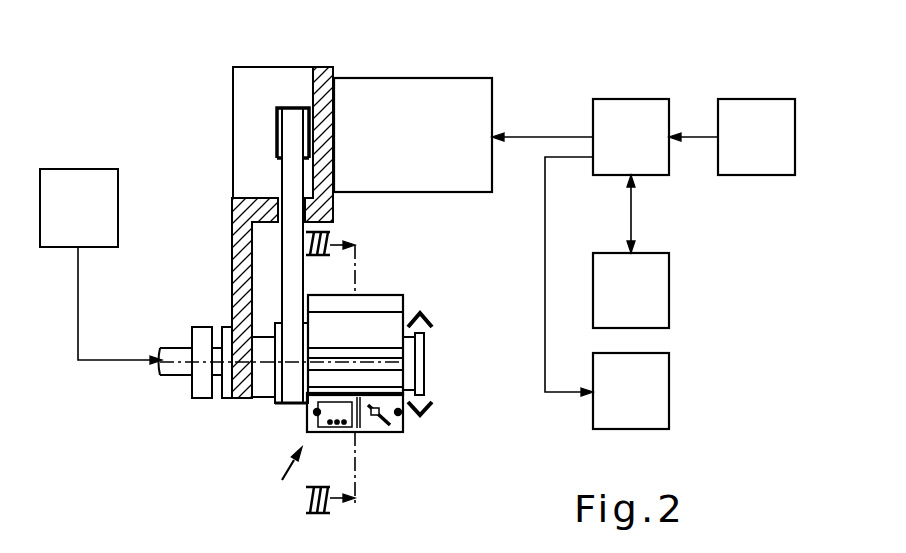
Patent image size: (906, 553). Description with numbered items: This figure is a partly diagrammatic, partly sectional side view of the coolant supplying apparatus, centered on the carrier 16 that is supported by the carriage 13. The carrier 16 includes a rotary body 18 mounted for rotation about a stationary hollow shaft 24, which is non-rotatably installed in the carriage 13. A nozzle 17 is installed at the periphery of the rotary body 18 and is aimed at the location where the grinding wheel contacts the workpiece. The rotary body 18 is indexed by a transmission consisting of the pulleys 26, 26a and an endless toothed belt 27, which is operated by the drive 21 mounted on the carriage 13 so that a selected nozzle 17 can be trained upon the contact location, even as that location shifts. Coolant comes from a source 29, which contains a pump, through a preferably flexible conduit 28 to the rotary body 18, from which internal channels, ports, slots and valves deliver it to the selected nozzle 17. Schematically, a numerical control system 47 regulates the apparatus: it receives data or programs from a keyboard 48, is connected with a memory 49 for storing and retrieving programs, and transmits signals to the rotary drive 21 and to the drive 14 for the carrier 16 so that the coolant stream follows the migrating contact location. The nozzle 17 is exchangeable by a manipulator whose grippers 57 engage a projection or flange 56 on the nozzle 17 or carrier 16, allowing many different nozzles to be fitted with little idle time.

The carriage 13 is at (320, 92).
The pulley 26a is at (275, 127).
The endless toothed belt 27 is at (290, 180).
The pulley 26 is at (275, 323).
The source of coolant 29 is at (110, 232).
The conduit 28 is at (177, 358).
The hollow shaft 24 is at (267, 380).
The drive 21 is at (383, 93).
The rotary body 18 is at (363, 305).
The projection or flange 56 is at (425, 345).
The grippers 57 is at (430, 410).
The nozzle 17 is at (362, 422).
The carrier 16 is at (277, 482).
The control system 47 is at (619, 110).
The keyboard 48 is at (742, 112).
The memory 49 is at (640, 297).
The drive 14 is at (655, 397).